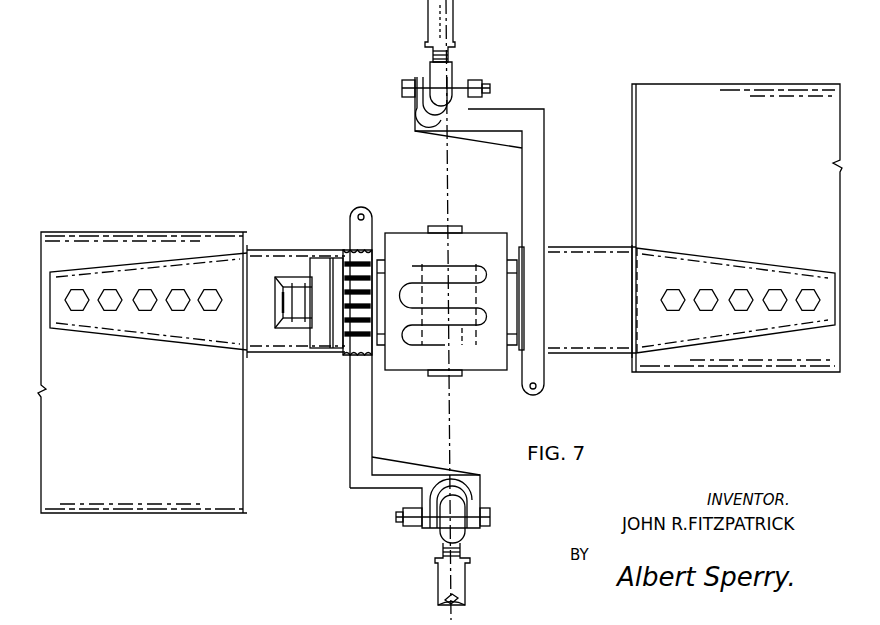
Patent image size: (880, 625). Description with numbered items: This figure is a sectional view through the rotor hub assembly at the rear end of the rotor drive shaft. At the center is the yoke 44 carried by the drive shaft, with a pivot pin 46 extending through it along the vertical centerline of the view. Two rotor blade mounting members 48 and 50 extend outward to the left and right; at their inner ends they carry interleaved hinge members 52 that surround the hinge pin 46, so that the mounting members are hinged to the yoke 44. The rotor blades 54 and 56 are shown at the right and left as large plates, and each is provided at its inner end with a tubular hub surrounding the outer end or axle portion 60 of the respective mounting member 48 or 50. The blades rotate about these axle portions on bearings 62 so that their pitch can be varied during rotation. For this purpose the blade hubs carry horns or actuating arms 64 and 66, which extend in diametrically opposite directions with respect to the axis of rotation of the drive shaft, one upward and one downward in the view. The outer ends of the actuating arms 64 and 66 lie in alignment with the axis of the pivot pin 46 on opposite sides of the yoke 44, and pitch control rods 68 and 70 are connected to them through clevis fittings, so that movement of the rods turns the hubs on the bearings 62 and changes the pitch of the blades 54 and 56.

The yoke 44 is at (482, 247).
The pivot pin 46 is at (463, 333).
The rotor blade mounting member 48 is at (231, 343).
The rotor blade mounting member 50 is at (651, 336).
The interleaved hinge members 52 is at (418, 338).
The rotor blade 54 is at (686, 105).
The rotor blade 56 is at (229, 503).
The axle portion 60 is at (281, 285).
The bearings 62 is at (347, 333).
The actuating arm 64 is at (537, 159).
The actuating arm 66 is at (362, 453).
The pitch control rod 68 is at (436, 20).
The pitch control rod 70 is at (445, 580).